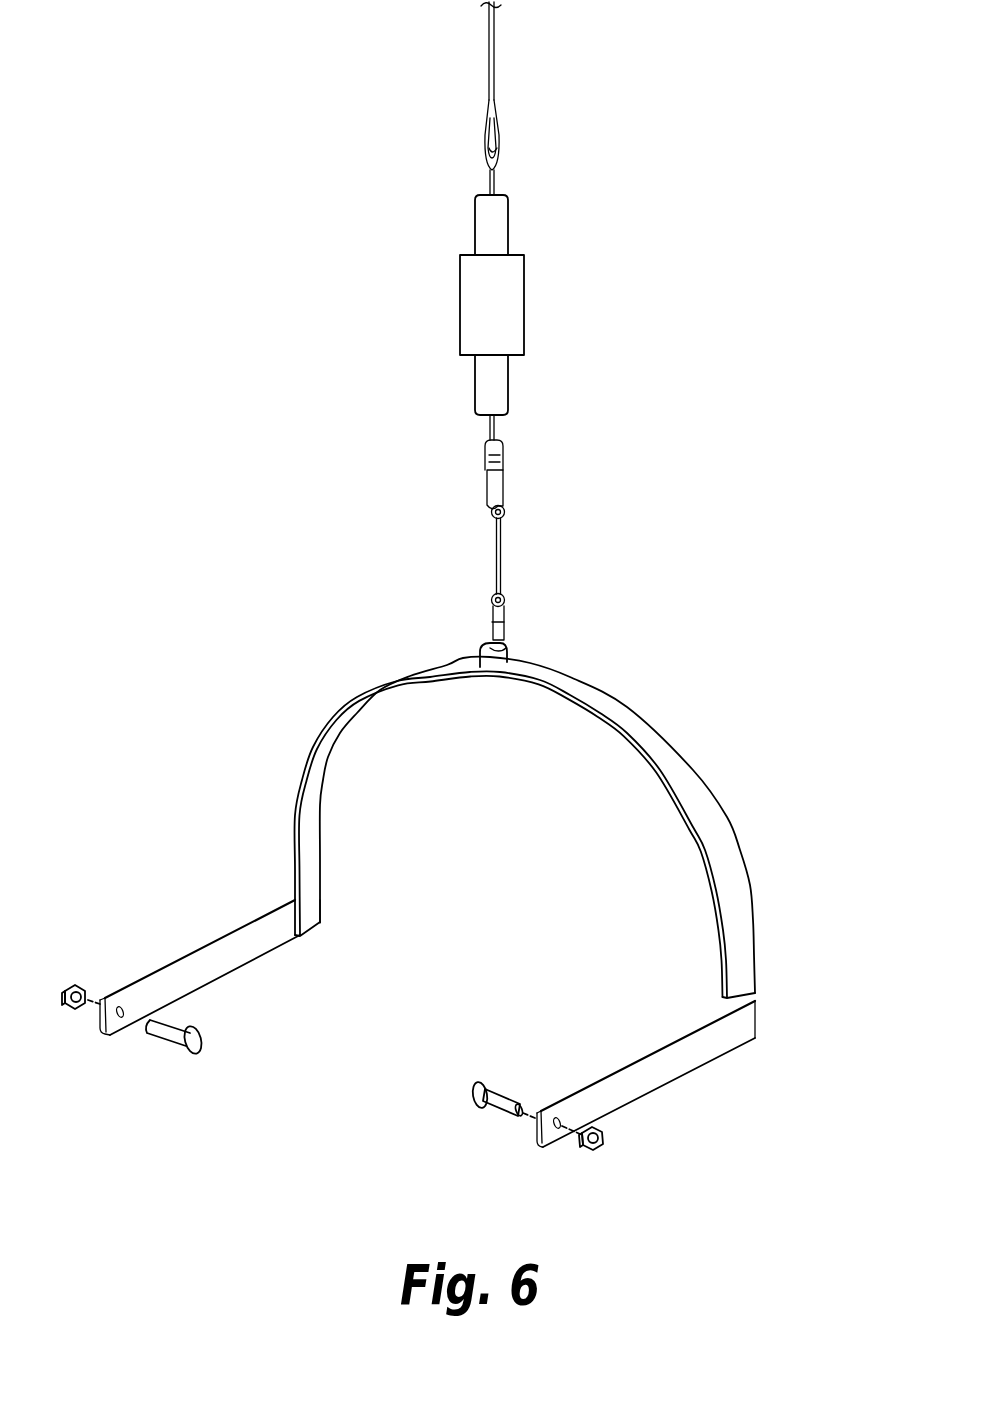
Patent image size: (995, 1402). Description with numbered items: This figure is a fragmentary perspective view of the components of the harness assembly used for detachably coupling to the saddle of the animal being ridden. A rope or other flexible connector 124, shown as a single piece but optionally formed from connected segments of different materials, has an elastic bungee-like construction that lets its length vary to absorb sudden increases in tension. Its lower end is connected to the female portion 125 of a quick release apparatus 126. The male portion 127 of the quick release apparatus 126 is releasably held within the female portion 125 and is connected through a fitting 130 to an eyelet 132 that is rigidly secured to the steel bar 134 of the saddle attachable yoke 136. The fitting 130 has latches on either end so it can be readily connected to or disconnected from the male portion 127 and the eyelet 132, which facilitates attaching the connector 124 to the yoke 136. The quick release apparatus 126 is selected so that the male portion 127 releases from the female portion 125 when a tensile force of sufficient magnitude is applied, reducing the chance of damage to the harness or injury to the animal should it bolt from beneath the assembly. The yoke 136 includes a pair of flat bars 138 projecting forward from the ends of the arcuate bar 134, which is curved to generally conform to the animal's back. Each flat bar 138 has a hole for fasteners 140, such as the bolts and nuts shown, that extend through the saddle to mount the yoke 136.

The flexible connector 124 is at (491, 45).
The female portion 125 is at (508, 294).
The quick release apparatus 126 is at (457, 305).
The male portion 127 is at (510, 378).
The fitting 130 is at (496, 552).
The eyelet 132 is at (508, 650).
The steel bar 134 is at (726, 850).
The saddle attachable yoke 136 is at (480, 916).
The flat bars 138 is at (238, 950).
The fasteners 140 is at (170, 1040).